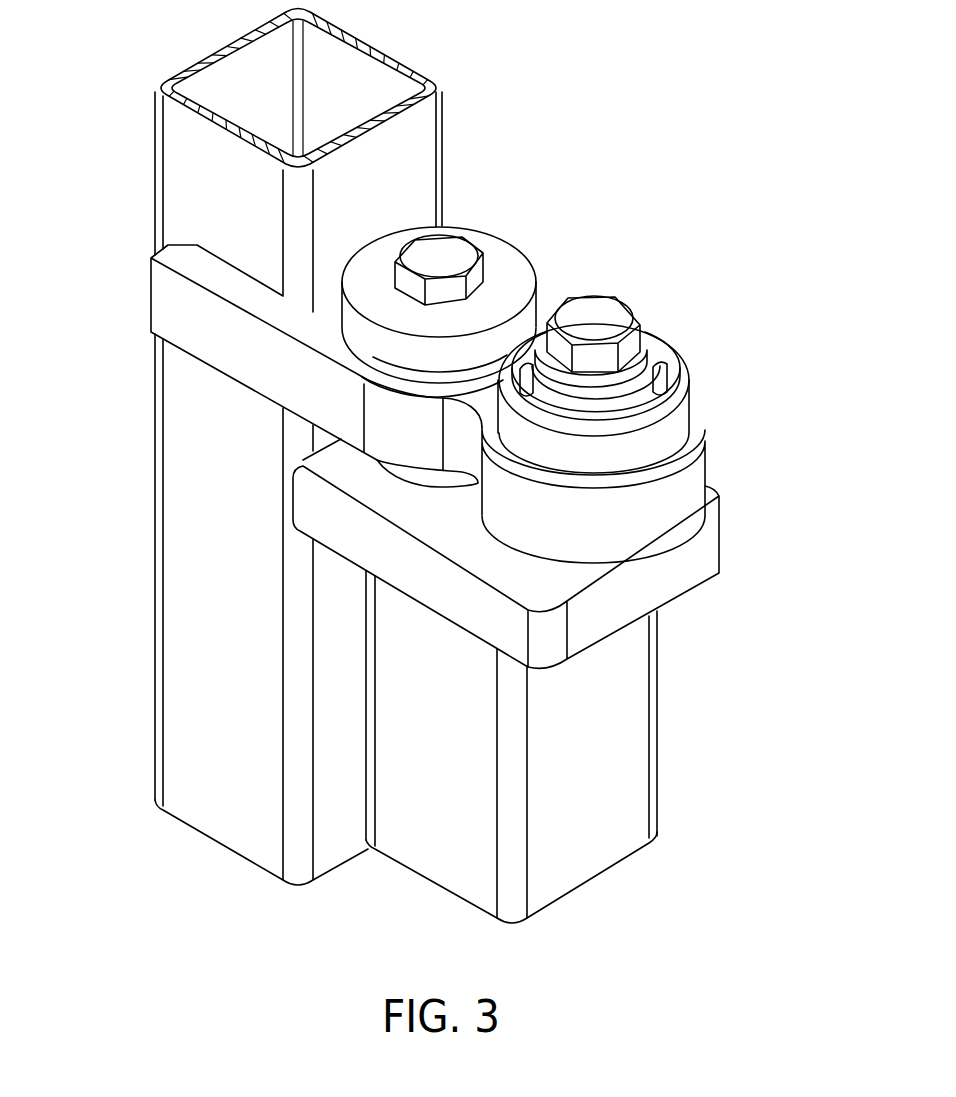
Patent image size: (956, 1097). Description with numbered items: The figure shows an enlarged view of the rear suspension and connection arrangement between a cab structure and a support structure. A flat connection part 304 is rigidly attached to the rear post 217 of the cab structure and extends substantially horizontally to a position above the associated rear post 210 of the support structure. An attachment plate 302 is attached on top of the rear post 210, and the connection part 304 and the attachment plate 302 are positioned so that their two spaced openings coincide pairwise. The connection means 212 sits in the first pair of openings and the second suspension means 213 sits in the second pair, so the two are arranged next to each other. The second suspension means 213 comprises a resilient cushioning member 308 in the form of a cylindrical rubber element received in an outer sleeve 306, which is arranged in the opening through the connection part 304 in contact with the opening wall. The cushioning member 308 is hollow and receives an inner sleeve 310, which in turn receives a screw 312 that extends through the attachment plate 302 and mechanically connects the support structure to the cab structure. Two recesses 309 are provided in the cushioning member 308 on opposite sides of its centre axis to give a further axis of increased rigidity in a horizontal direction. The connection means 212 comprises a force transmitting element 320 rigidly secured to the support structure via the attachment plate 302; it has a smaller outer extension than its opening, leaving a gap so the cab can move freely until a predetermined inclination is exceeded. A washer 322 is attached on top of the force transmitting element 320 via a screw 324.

The rear post 210 is at (640, 745).
The connection means 212 is at (488, 208).
The second suspension means 213 is at (647, 302).
The rear post 217 is at (195, 667).
The attachment plate 302 is at (686, 574).
The connection part 304 is at (697, 475).
The outer sleeve 306 is at (675, 423).
The resilient cushioning member 308 is at (665, 355).
The recesses 309 is at (667, 370).
The inner sleeve 310 is at (645, 342).
The screw 312 is at (613, 313).
The force transmitting element 320 is at (417, 478).
The washer 322 is at (383, 312).
The screw 324 is at (460, 258).